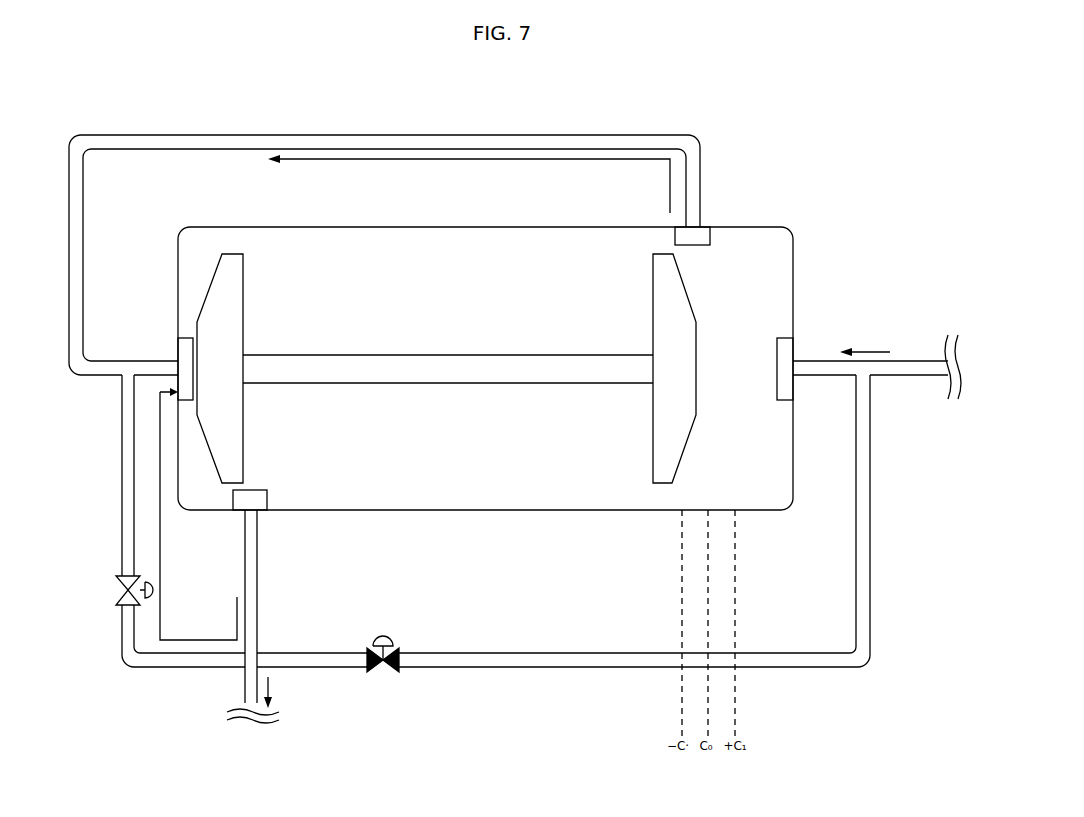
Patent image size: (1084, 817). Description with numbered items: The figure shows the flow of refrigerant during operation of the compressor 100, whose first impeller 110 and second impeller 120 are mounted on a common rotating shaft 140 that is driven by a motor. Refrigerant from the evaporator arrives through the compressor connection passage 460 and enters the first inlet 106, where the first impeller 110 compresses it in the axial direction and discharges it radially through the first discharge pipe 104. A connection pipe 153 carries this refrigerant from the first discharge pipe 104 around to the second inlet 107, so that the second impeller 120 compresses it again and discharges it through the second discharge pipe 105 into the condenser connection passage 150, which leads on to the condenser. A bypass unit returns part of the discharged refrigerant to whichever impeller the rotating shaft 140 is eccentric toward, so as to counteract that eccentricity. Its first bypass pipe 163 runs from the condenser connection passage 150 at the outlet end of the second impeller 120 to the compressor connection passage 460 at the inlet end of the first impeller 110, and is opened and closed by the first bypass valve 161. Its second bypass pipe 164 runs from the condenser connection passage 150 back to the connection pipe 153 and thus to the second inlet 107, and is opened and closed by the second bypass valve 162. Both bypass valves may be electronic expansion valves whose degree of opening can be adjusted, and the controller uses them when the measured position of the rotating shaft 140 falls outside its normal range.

The compressor 100 is at (800, 217).
The first discharge pipe 104 is at (703, 235).
The second discharge pipe 105 is at (258, 502).
The first inlet 106 is at (785, 347).
The second inlet 107 is at (187, 352).
The first impeller 110 is at (681, 424).
The second impeller 120 is at (235, 429).
The rotating shaft 140 is at (522, 373).
The condenser connection passage 150 is at (250, 706).
The connection pipe 153 is at (565, 141).
The first bypass valve 161 is at (390, 672).
The second bypass valve 162 is at (122, 598).
The first bypass pipe 163 is at (588, 661).
The second bypass pipe 164 is at (127, 483).
The compressor connection passage 460 is at (903, 368).